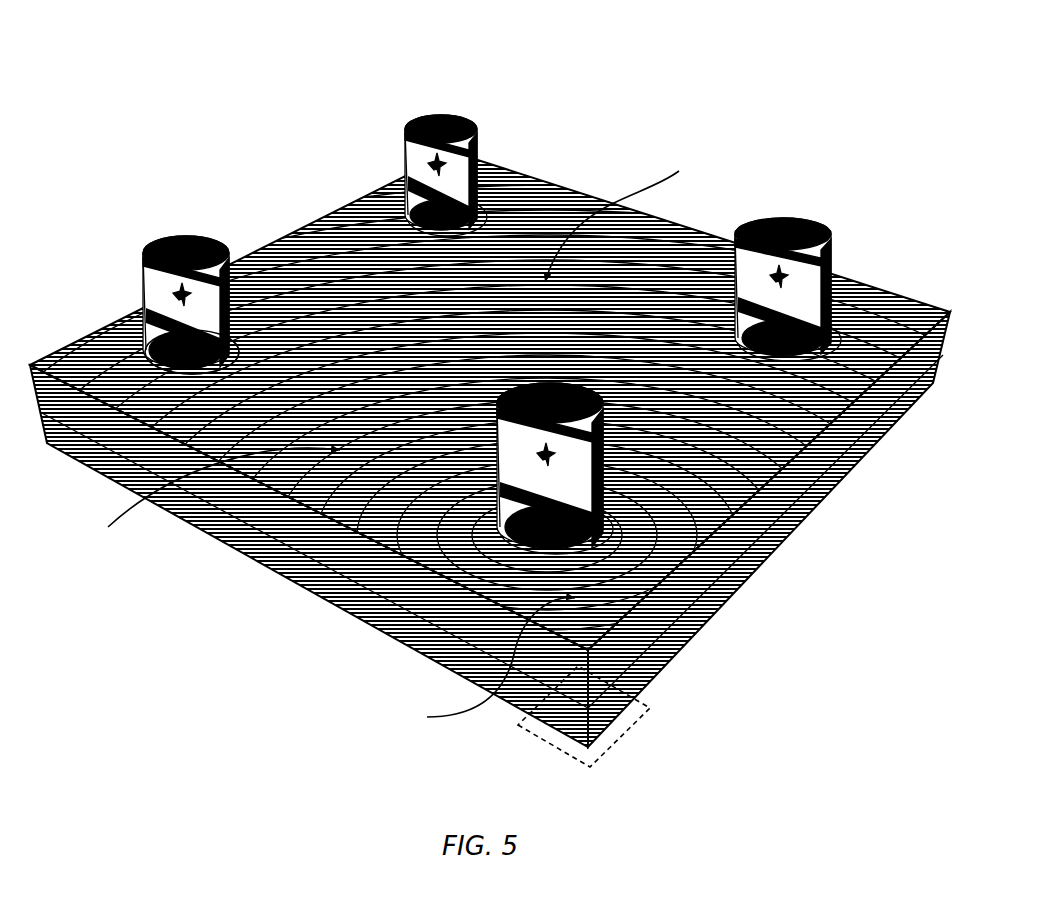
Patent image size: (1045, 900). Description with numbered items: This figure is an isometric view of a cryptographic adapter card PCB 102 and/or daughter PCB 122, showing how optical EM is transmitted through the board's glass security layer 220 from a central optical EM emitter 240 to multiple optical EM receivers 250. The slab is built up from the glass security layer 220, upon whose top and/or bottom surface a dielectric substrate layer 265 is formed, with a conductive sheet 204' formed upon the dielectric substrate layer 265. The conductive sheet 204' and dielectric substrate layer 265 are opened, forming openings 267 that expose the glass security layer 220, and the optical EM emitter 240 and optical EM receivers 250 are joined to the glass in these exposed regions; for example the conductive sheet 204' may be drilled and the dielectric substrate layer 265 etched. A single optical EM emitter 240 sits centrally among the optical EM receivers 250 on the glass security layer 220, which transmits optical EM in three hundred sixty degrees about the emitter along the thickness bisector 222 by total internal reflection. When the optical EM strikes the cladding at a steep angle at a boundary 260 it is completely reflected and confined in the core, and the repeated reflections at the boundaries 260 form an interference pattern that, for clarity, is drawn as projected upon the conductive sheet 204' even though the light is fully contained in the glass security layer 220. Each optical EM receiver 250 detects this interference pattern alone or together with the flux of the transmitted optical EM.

The cryptographic adapter card PCB 102 is at (163, 55).
The daughter PCB 122 is at (228, 55).
The glass security layer 220 is at (302, 547).
The conductive sheet 204' is at (490, 529).
The dielectric substrate layer 265 is at (388, 612).
The thickness bisector 222 is at (623, 713).
The optical EM emitter 240 is at (603, 443).
The optical EM receiver 250 is at (453, 107).
The boundary 260 is at (391, 437).
The opening 267 is at (175, 364).